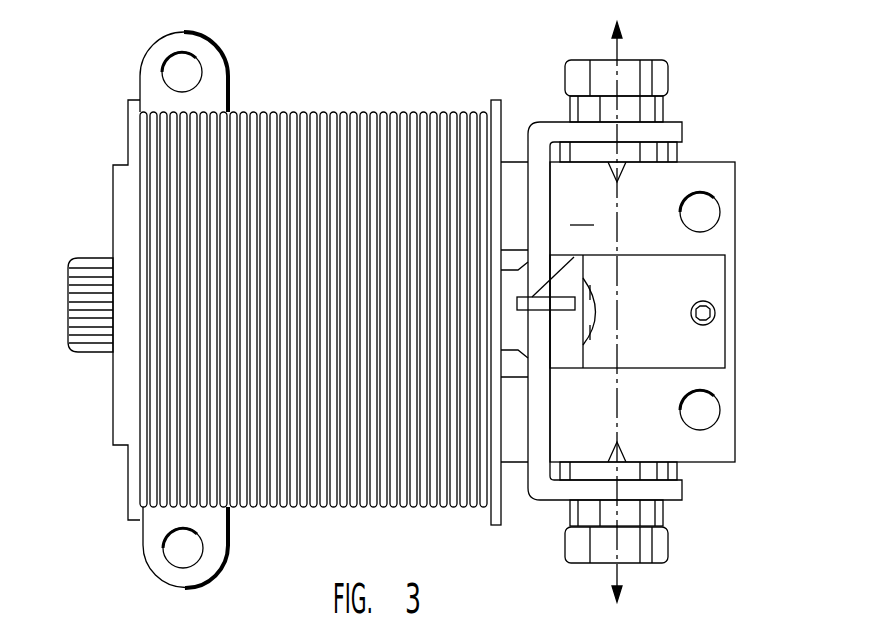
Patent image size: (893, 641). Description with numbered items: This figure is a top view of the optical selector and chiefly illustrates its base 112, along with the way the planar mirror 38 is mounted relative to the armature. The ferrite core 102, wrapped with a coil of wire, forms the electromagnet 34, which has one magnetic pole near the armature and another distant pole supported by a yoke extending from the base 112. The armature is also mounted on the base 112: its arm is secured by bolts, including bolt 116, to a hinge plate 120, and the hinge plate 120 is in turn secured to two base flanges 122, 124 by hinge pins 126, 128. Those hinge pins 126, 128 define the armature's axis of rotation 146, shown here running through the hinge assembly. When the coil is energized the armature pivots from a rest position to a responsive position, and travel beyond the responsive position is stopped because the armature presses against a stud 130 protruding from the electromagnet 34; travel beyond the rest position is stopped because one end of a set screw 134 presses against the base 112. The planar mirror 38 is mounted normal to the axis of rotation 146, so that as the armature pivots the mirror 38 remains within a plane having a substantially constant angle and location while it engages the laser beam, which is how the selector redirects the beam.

The electromagnet 34 is at (355, 242).
The planar mirror 38 is at (558, 308).
The ferrite core 102 is at (96, 347).
The base 112 is at (148, 60).
The bolt 116 is at (598, 313).
The hinge plate 120 is at (540, 130).
The base flange 122 is at (690, 472).
The base flange 124 is at (680, 152).
The hinge pin 126 is at (668, 545).
The hinge pin 128 is at (663, 82).
The stud 130 is at (533, 255).
The set screw 134 is at (713, 300).
The axis of rotation 146 is at (612, 580).